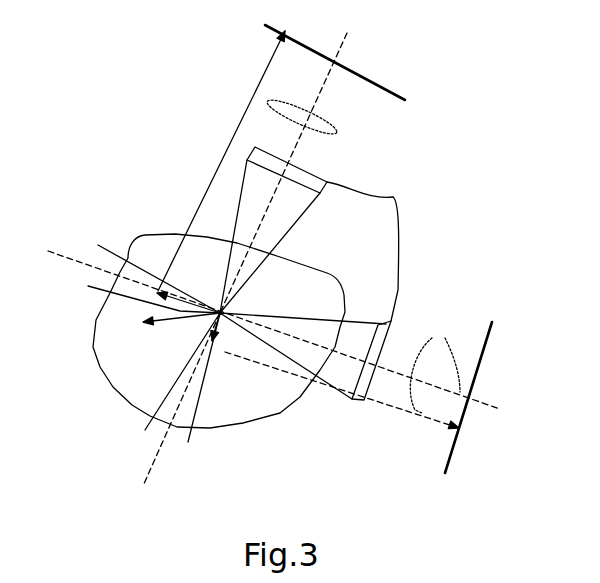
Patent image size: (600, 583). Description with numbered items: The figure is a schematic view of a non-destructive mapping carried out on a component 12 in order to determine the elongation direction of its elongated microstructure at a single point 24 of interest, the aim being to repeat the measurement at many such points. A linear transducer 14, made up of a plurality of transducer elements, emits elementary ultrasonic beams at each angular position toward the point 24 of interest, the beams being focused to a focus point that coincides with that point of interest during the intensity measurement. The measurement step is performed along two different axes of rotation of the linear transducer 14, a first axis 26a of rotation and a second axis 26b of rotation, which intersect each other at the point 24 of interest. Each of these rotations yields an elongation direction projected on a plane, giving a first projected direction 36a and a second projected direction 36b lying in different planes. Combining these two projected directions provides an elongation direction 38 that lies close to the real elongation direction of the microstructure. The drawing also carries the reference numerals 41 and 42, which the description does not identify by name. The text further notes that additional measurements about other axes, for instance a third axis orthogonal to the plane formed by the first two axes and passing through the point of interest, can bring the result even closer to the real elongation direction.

The component 12 is at (330, 275).
The linear transducer 14 is at (373, 251).
The point of interest 24 is at (226, 310).
The first axis of rotation 26a is at (325, 87).
The second axis of rotation 26b is at (433, 376).
The first projected elongation direction 36a is at (218, 338).
The second projected elongation direction 36b is at (203, 304).
The elongation direction 38 is at (168, 320).
The first plane 41 is at (397, 94).
The second plane 42 is at (487, 347).